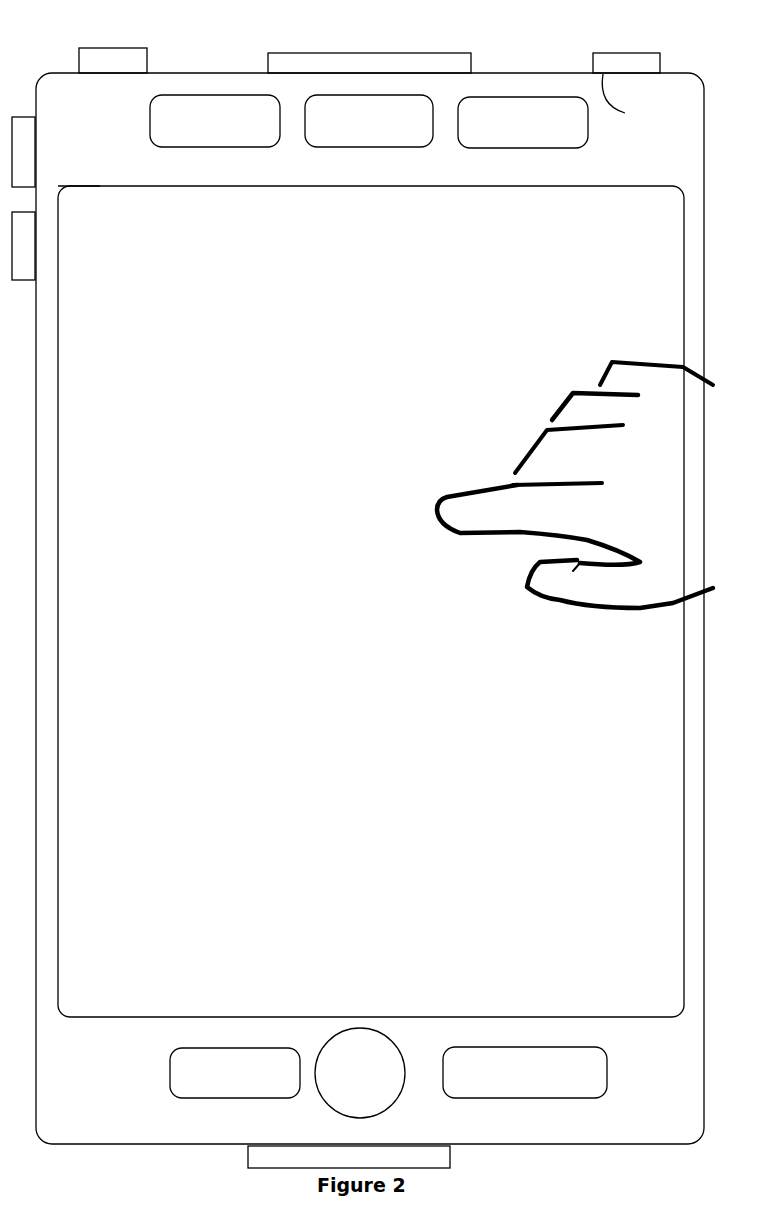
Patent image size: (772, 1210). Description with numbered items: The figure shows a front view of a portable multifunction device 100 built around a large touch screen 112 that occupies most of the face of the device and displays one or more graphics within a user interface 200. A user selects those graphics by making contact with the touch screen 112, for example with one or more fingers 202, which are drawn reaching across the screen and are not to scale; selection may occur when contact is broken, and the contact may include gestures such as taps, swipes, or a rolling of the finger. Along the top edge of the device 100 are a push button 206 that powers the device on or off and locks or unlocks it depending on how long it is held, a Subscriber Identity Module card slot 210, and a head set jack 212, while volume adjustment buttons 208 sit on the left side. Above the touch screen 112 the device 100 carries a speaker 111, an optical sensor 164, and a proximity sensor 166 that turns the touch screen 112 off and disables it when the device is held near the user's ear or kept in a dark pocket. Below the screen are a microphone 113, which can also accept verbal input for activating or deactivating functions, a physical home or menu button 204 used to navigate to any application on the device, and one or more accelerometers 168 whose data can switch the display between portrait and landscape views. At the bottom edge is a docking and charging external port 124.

The portable multifunction device 100 is at (548, 72).
The touch screen 112 is at (371, 601).
The user interface 200 is at (104, 186).
The push button 206 is at (113, 60).
The SIM card slot 210 is at (369, 63).
The head set jack 212 is at (636, 100).
The volume adjustment buttons 208 is at (23, 198).
The speaker 111 is at (215, 121).
The optical sensor 164 is at (369, 121).
The proximity sensor 166 is at (523, 122).
The microphone 113 is at (235, 1073).
The menu button 204 is at (360, 1073).
The accelerometer 168 is at (525, 1072).
The external port 124 is at (349, 1157).
The finger 202 is at (575, 485).